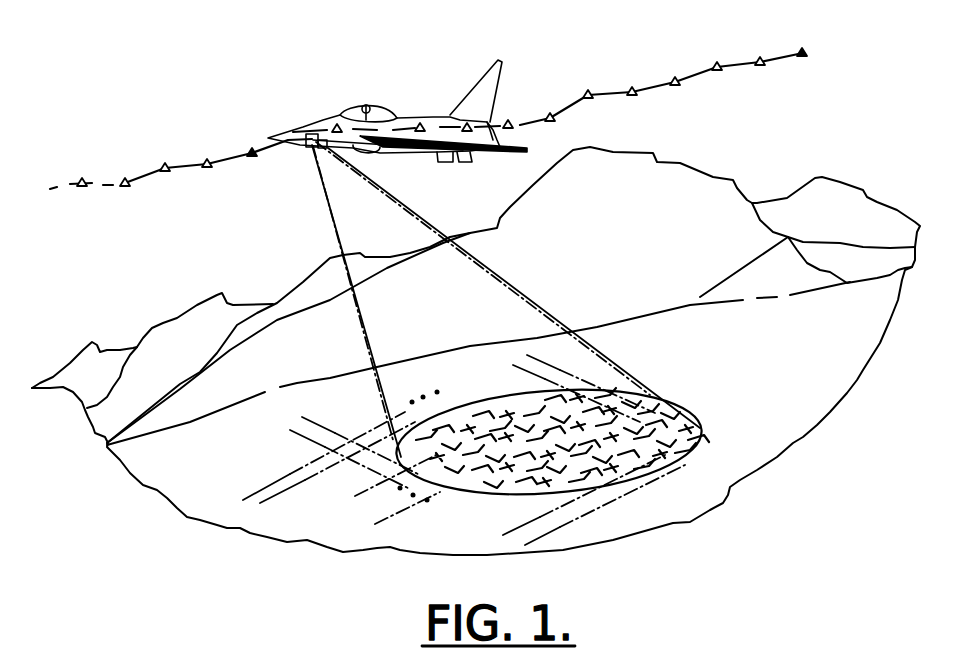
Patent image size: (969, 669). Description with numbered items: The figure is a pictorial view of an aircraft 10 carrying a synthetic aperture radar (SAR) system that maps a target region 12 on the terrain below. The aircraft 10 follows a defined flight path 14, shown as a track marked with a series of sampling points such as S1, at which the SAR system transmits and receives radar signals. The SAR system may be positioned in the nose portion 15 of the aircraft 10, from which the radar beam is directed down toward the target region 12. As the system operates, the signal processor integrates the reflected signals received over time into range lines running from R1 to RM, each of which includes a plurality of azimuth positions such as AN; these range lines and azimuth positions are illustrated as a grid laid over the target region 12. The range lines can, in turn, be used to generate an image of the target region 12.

The aircraft 10 is at (410, 153).
The target region 12 is at (702, 410).
The flight path 14 is at (193, 163).
The nose portion 15 is at (293, 138).
The sampling point S1 is at (800, 50).
The azimuth position AN is at (262, 440).
The range line R1 is at (357, 495).
The range line RM is at (403, 512).